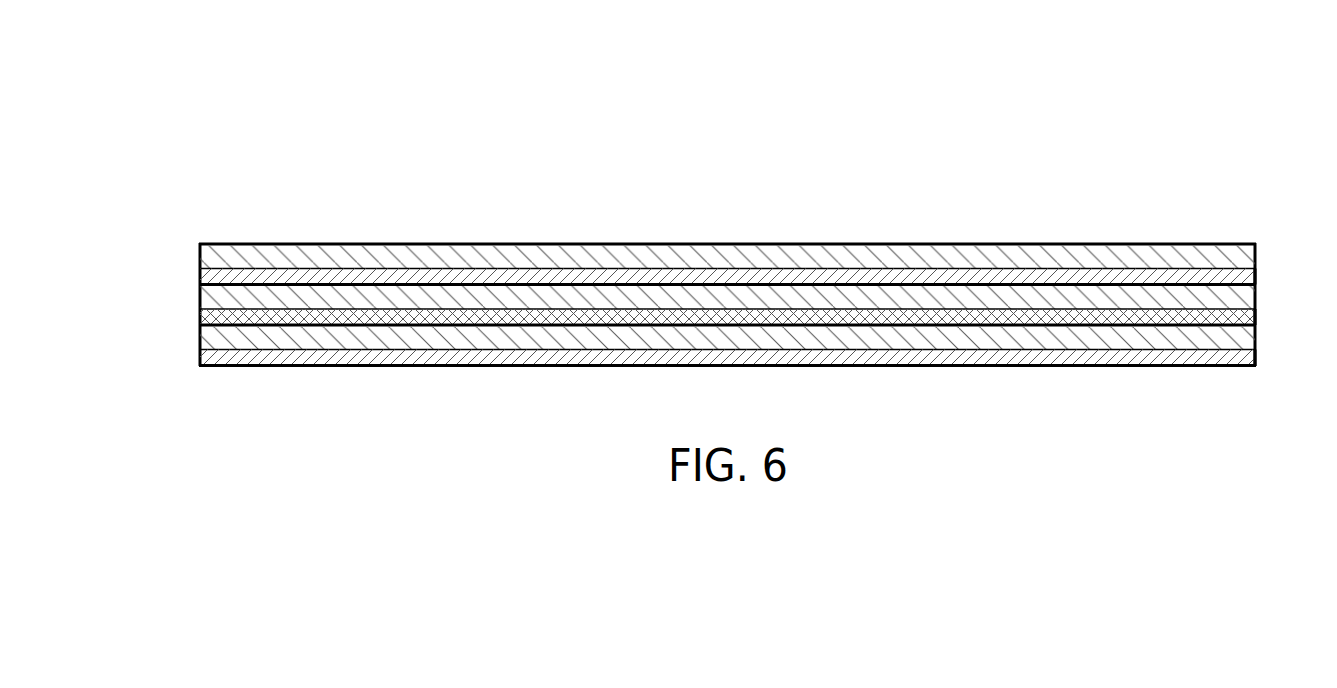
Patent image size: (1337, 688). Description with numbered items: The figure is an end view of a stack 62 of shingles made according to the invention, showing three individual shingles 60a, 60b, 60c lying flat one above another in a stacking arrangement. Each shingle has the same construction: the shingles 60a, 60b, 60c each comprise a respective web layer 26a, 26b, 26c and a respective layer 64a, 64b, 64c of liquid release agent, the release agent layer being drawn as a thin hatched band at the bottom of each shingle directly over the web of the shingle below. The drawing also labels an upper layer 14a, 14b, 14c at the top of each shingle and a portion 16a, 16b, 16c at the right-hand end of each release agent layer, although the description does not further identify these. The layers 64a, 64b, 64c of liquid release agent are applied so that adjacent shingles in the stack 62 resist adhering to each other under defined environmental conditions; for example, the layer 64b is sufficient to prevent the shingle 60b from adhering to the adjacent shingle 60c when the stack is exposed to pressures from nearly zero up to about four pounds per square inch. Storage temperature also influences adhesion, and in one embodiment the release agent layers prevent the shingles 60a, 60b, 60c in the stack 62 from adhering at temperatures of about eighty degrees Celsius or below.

The stack 62 is at (262, 149).
The shingle 60a is at (198, 245).
The shingle 60b is at (198, 286).
The shingle 60c is at (198, 327).
The first face layer 14a is at (553, 243).
The second face layer 14b is at (660, 283).
The third face layer 14c is at (625, 327).
The web layer 26a is at (1023, 257).
The web layer 26b is at (1103, 300).
The web layer 26c is at (1080, 337).
The layer of liquid release agent 64a is at (868, 278).
The layer of liquid release agent 64b is at (845, 313).
The layer of liquid release agent 64c is at (942, 357).
The first release liner 16a is at (1234, 272).
The second release liner 16b is at (1234, 312).
The third release liner 16c is at (1234, 353).